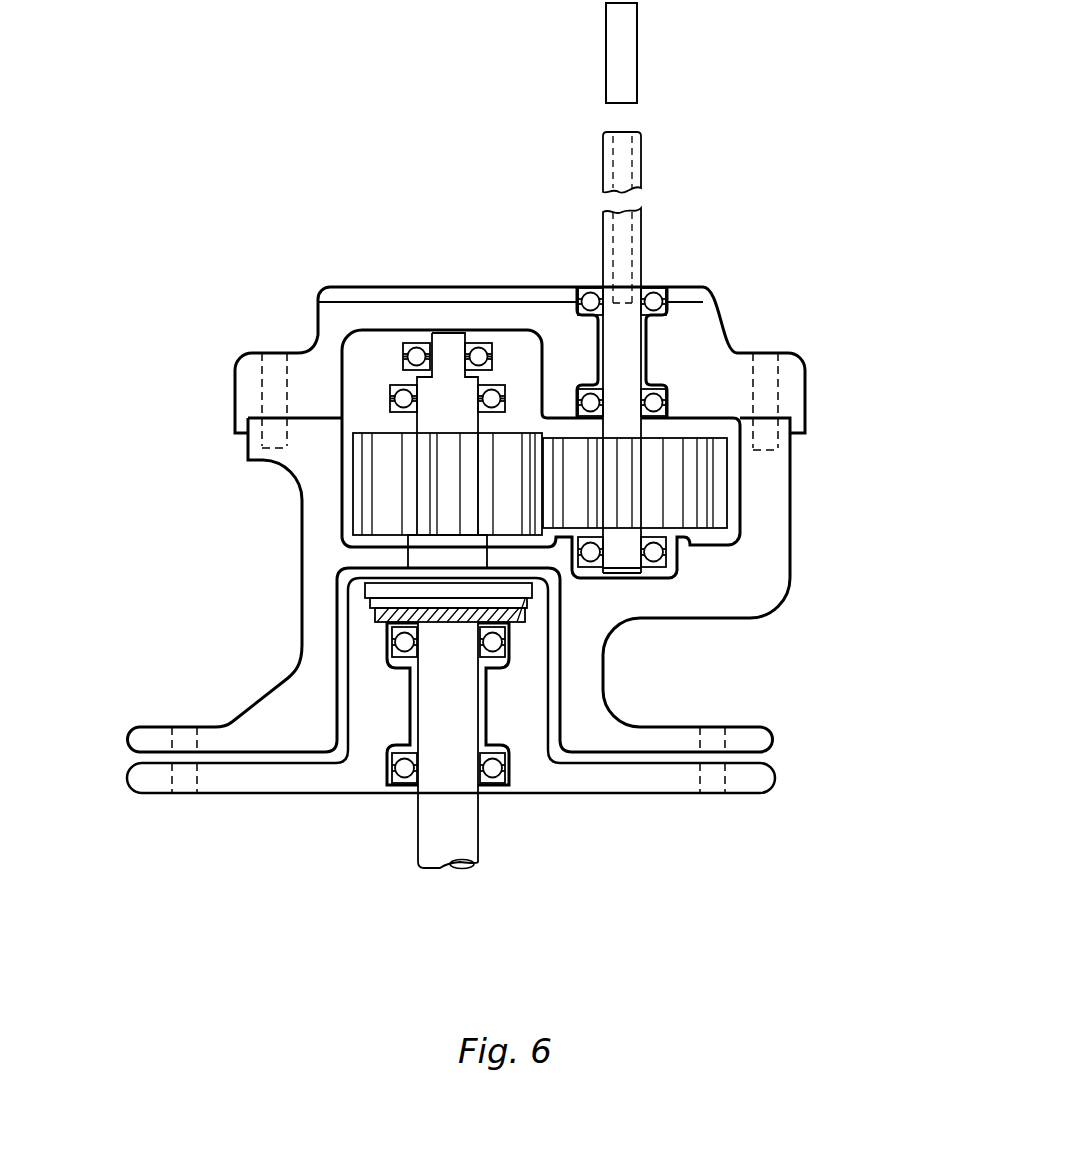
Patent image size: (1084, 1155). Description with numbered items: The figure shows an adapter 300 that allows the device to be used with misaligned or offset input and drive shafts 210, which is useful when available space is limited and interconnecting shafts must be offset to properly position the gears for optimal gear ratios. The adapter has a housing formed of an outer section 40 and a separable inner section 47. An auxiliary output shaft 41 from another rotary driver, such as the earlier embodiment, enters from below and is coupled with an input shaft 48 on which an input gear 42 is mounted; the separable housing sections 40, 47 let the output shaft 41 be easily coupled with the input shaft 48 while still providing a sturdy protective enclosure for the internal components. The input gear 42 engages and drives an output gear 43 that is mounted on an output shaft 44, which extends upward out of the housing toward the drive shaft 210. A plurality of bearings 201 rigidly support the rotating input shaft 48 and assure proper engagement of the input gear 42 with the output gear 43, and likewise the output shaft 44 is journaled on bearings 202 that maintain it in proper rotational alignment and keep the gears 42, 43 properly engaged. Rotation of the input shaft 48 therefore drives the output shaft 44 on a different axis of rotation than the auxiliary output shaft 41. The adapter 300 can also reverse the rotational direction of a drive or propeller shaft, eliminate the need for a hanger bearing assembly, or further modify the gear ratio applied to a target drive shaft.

The adapter 300 is at (744, 118).
The drive shaft 210 is at (620, 50).
The bearings 201 is at (487, 388).
The bearings 202 is at (595, 398).
The output shaft 44 is at (603, 240).
The input gear 42 is at (387, 483).
The output gear 43 is at (700, 487).
The input shaft 48 is at (407, 558).
The outer section 40 is at (259, 698).
The inner section 47 is at (318, 780).
The output shaft 41 is at (480, 823).